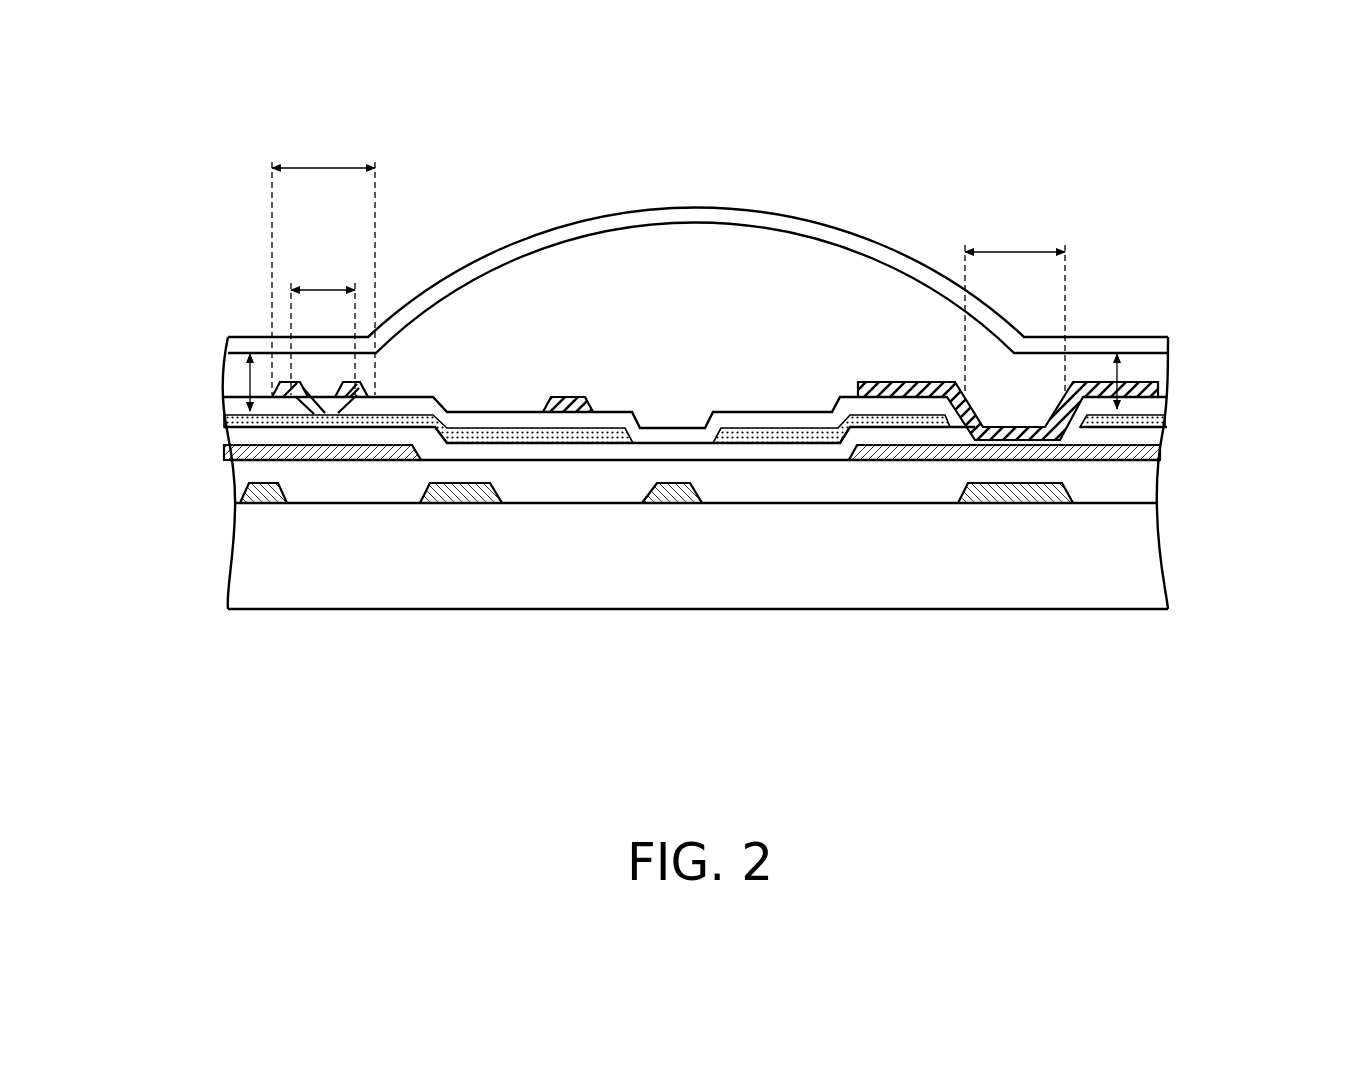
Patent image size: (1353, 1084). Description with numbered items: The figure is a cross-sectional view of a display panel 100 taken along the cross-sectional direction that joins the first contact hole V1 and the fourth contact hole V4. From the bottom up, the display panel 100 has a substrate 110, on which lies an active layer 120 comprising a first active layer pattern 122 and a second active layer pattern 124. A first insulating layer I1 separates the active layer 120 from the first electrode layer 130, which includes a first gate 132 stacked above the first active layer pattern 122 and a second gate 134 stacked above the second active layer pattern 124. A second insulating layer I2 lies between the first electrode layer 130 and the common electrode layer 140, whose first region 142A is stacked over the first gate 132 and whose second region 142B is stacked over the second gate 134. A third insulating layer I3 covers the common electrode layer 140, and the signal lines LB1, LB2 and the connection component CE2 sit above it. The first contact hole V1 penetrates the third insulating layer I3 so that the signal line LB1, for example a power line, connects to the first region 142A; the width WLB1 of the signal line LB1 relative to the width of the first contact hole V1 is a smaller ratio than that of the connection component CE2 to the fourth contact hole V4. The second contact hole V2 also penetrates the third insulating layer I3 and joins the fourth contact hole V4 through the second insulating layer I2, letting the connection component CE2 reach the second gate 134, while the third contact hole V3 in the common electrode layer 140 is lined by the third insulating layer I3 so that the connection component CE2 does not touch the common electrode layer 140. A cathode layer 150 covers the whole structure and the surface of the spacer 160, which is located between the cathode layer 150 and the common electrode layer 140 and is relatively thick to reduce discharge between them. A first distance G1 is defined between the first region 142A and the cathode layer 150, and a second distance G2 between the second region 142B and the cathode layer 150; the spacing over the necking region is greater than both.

The display panel 100 is at (1321, 755).
The substrate 110 is at (1155, 557).
The active layer 120 is at (589, 600).
The first active layer pattern 122 is at (255, 495).
The second active layer pattern 124 is at (668, 497).
The first electrode layer 130 is at (702, 463).
The first gate 132 is at (240, 452).
The second gate 134 is at (1128, 452).
The common electrode layer 140 is at (694, 566).
The first region 142A is at (537, 432).
The second region 142B is at (800, 433).
The cathode layer 150 is at (1140, 345).
The spacer 160 is at (704, 270).
The first insulating layer I1 is at (600, 490).
The second insulating layer I2 is at (760, 452).
The third insulating layer I3 is at (380, 405).
The signal line LB1 is at (326, 410).
The signal line LB2 is at (565, 397).
The connection component CE2 is at (858, 162).
The first distance G1 is at (250, 382).
The second distance G2 is at (1117, 376).
The first contact hole V1 is at (288, 403).
The second contact hole V2 is at (1056, 400).
The third contact hole V3 is at (1083, 415).
The fourth contact hole V4 is at (1052, 437).
The width of the signal line LB1 WLB1 is at (323, 254).